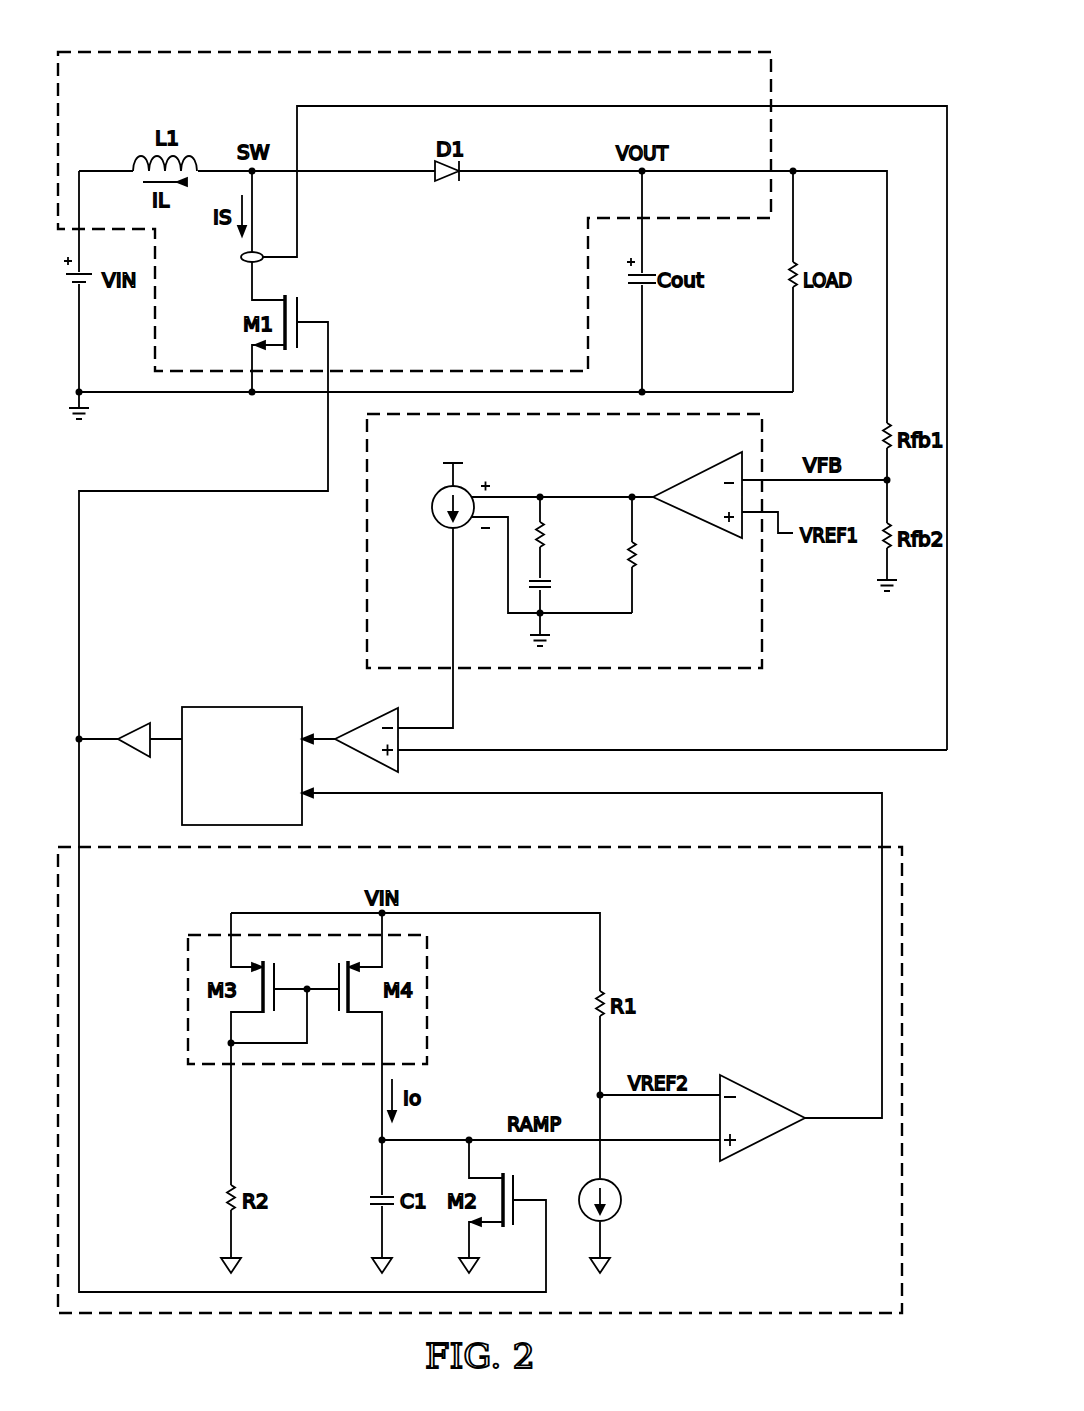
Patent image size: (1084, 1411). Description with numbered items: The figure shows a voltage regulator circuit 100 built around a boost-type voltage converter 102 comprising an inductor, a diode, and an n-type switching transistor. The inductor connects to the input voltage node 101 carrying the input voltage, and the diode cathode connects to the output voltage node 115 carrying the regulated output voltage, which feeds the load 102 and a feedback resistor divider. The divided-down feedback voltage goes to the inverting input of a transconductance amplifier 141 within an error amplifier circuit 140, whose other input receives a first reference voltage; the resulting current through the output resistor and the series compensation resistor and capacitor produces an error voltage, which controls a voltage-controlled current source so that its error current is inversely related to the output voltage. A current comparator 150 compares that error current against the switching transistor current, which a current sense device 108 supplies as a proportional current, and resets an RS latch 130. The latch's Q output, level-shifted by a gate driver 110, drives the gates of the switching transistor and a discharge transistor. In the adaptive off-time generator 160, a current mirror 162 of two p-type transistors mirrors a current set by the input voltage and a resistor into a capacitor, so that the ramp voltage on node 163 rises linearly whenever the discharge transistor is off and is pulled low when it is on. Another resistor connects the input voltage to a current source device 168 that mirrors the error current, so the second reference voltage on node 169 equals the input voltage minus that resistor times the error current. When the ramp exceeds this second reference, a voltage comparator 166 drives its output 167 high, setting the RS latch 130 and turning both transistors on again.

The voltage regulator circuit 100 is at (852, 63).
The input voltage node 101 is at (108, 169).
The voltage converter 102 is at (228, 95).
The current sense device 108 is at (240, 257).
The gate driver 110 is at (134, 752).
The output voltage node 115 is at (717, 170).
The RS latch 130 is at (240, 706).
The error amplifier circuit 140 is at (762, 606).
The transconductance amplifier 141 is at (695, 475).
The current comparator 150 is at (368, 724).
The adaptive off-time generator 160 is at (790, 1314).
The current mirror 162 is at (187, 1012).
The node 163 is at (379, 1145).
The voltage comparator 166 is at (762, 1140).
The output of the voltage comparator 167 is at (842, 1121).
The current source device 168 is at (614, 1219).
The node 169 is at (597, 1058).